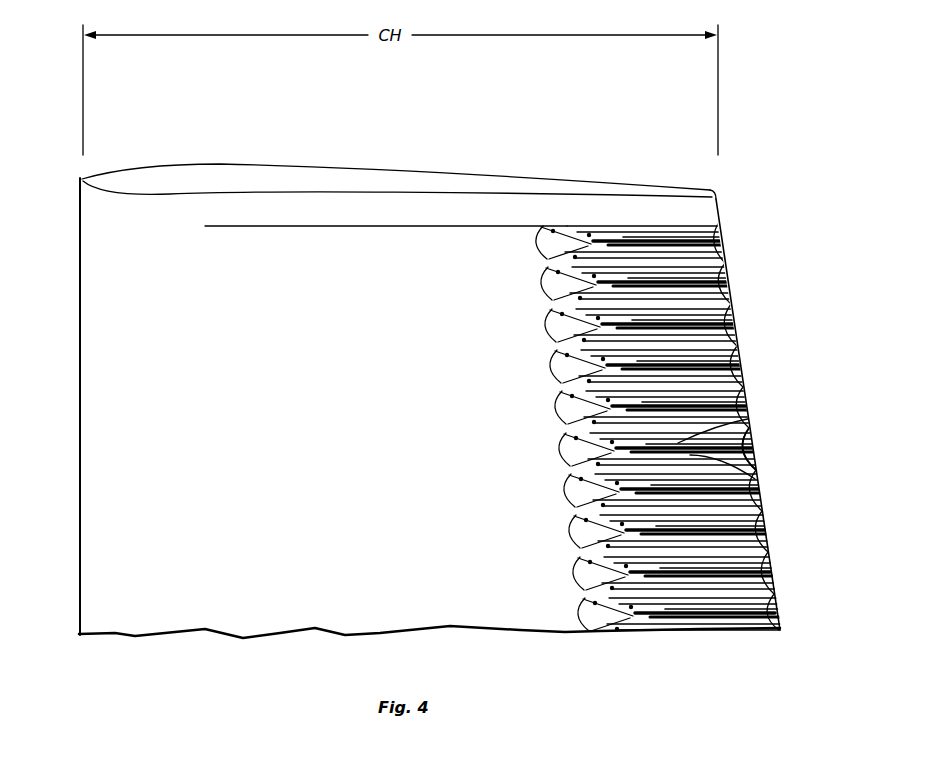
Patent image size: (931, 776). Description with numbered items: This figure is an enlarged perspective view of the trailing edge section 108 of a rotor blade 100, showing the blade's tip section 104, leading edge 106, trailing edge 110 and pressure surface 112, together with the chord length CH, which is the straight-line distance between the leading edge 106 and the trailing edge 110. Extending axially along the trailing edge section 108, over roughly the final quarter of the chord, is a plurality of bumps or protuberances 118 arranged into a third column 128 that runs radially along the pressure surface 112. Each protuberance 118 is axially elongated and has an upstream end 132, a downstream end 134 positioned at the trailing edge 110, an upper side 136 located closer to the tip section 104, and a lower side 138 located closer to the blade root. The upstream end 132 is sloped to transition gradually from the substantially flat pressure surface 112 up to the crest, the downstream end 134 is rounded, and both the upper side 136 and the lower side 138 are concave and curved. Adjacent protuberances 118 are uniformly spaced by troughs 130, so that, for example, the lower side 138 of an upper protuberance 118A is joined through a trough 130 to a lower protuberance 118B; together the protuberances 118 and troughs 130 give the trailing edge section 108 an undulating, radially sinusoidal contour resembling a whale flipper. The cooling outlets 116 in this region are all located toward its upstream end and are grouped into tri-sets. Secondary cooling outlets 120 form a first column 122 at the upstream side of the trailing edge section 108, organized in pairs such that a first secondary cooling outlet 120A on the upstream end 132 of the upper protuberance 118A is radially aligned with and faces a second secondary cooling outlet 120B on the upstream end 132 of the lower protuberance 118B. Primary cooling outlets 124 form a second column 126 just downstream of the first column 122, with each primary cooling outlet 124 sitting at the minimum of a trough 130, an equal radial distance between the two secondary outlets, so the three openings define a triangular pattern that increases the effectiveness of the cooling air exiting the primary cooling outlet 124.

The rotor blade 100 is at (190, 131).
The tip section 104 is at (82, 178).
The leading edge 106 is at (83, 396).
The trailing edge section 108 is at (783, 640).
The trailing edge 110 is at (757, 516).
The pressure surface 112 is at (275, 470).
The cooling outlets 116 is at (583, 598).
The protuberances 118 is at (767, 565).
The upper protuberance 118A is at (722, 238).
The lower protuberance 118B is at (726, 293).
The secondary cooling outlets 120 is at (580, 514).
The first secondary cooling outlet 120A is at (533, 237).
The second secondary cooling outlet 120B is at (558, 268).
The first column 122 is at (559, 211).
The primary cooling outlets 124 is at (546, 290).
The second column 126 is at (588, 211).
The third column 128 is at (653, 211).
The troughs 130 is at (722, 266).
The upstream end 132 is at (541, 406).
The downstream end 134 is at (760, 447).
The upper side 136 is at (752, 418).
The lower side 138 is at (755, 479).